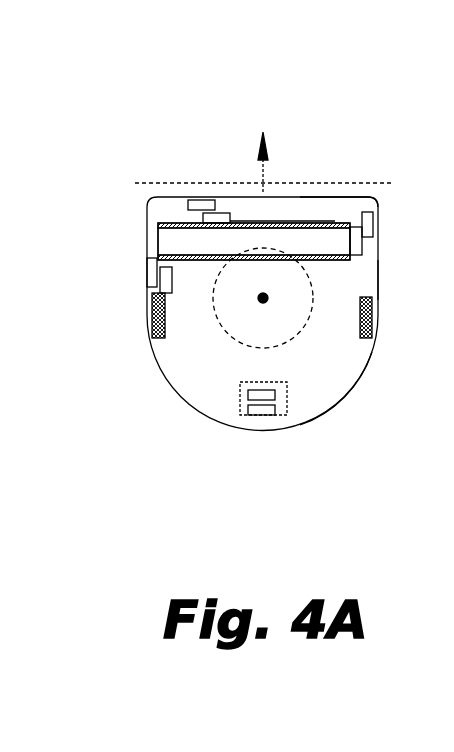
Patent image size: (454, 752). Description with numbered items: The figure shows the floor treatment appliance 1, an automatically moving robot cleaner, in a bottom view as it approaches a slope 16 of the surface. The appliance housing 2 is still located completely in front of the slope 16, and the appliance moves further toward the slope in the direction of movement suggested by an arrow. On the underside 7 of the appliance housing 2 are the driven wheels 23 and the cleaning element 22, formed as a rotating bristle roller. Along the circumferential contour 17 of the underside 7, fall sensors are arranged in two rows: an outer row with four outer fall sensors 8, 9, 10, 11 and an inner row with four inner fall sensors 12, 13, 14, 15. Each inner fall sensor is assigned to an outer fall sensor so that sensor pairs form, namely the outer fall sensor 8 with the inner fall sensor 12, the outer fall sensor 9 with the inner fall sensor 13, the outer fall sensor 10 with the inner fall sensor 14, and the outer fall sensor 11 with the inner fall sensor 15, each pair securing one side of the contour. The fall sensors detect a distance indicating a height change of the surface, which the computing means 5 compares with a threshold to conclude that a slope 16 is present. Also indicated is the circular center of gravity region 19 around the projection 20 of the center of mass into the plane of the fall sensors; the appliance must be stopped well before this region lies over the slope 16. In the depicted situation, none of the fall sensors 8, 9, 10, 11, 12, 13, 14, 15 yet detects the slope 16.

The floor treatment appliance 1 is at (148, 372).
The appliance housing 2 is at (343, 398).
The computing means 5 is at (287, 402).
The underside 7 is at (355, 281).
The outer fall sensor 8 is at (197, 200).
The outer fall sensor 9 is at (370, 222).
The outer fall sensor 10 is at (262, 415).
The outer fall sensor 11 is at (147, 271).
The inner fall sensor 12 is at (205, 217).
The inner fall sensor 13 is at (355, 245).
The inner fall sensor 14 is at (250, 395).
The inner fall sensor 15 is at (164, 286).
The slope 16 is at (303, 182).
The circumferential contour 17 is at (345, 197).
The center of gravity region 19 is at (290, 338).
The projection 20 is at (263, 298).
The cleaning element 22 is at (187, 238).
The wheels 23 is at (158, 322).